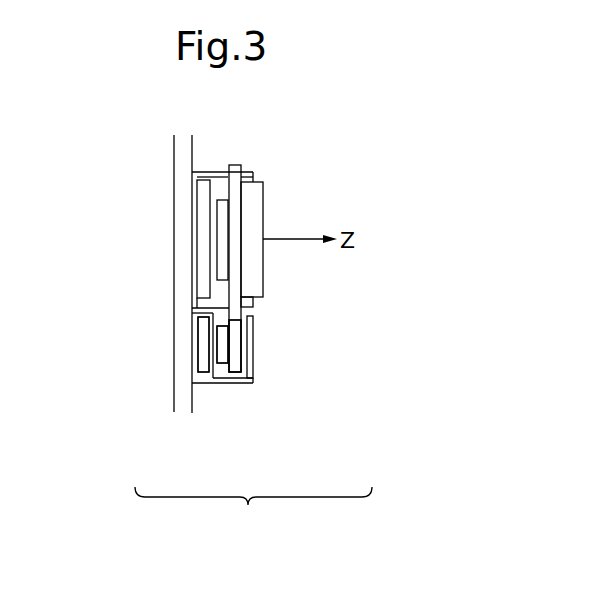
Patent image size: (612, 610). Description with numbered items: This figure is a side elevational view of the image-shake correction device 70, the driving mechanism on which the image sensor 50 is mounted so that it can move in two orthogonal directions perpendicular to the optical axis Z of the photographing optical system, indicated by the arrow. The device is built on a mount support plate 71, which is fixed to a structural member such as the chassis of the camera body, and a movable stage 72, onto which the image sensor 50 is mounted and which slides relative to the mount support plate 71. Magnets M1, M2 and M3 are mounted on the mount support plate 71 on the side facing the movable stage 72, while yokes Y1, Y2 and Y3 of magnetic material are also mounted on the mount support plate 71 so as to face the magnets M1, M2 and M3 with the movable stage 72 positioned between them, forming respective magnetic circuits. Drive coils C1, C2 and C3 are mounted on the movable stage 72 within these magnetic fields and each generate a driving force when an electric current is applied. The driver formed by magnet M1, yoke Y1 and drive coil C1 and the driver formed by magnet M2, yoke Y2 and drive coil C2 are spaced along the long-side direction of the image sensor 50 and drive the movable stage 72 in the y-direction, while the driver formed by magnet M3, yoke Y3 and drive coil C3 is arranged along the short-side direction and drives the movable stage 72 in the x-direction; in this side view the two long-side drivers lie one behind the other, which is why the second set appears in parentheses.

The image sensor 50 is at (253, 197).
The image-shake correction device 70 is at (253, 512).
The mount support plate 71 is at (180, 403).
The movable stage 72 is at (253, 383).
The magnet M3 is at (197, 172).
The drive coil C3 is at (218, 200).
The yoke Y3 is at (247, 172).
The magnet M1 is at (202, 372).
The drive coil C1 is at (222, 363).
The yoke Y1 is at (240, 368).
The magnet M2 is at (192, 404).
The drive coil C2 is at (243, 409).
The yoke Y2 is at (273, 406).